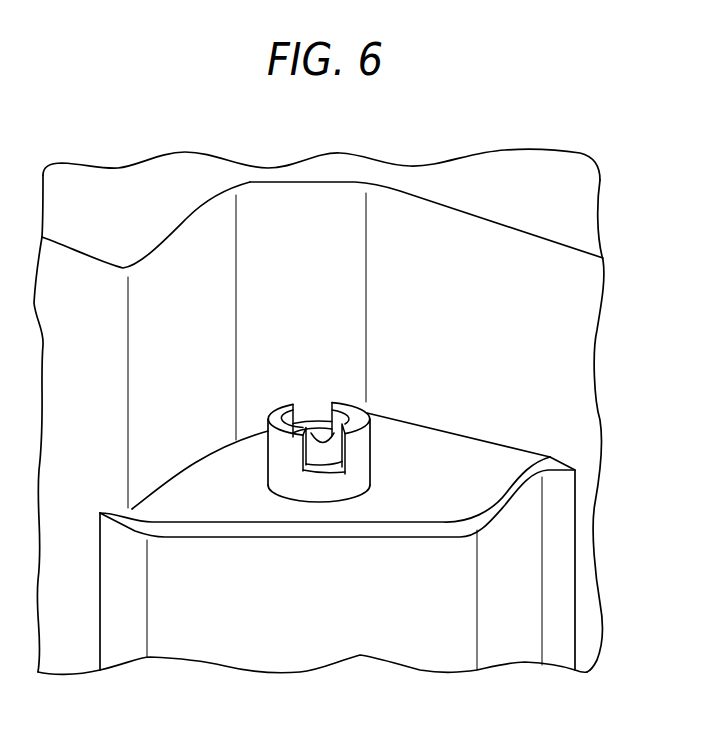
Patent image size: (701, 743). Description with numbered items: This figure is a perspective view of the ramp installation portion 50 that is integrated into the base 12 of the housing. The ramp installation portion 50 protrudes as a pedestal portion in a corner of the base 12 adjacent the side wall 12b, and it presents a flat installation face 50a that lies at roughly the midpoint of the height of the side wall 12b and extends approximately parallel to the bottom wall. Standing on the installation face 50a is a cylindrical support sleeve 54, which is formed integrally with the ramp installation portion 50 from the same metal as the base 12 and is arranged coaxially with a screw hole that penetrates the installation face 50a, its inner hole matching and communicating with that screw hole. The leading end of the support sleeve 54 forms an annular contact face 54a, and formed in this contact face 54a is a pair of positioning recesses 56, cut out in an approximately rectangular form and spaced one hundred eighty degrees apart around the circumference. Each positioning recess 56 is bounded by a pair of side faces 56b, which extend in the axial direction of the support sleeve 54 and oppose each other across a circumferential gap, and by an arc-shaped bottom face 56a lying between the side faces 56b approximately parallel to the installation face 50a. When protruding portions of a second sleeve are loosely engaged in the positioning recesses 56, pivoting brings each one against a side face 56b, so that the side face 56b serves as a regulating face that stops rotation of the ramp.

The base 12 is at (147, 199).
The side wall 12b is at (407, 217).
The ramp installation portion 50 is at (456, 626).
The installation face 50a is at (443, 452).
The support sleeve 54 is at (280, 457).
The contact face 54a is at (276, 418).
The positioning recess 56 is at (313, 418).
The bottom face 56a is at (337, 440).
The side face 56b is at (296, 410).